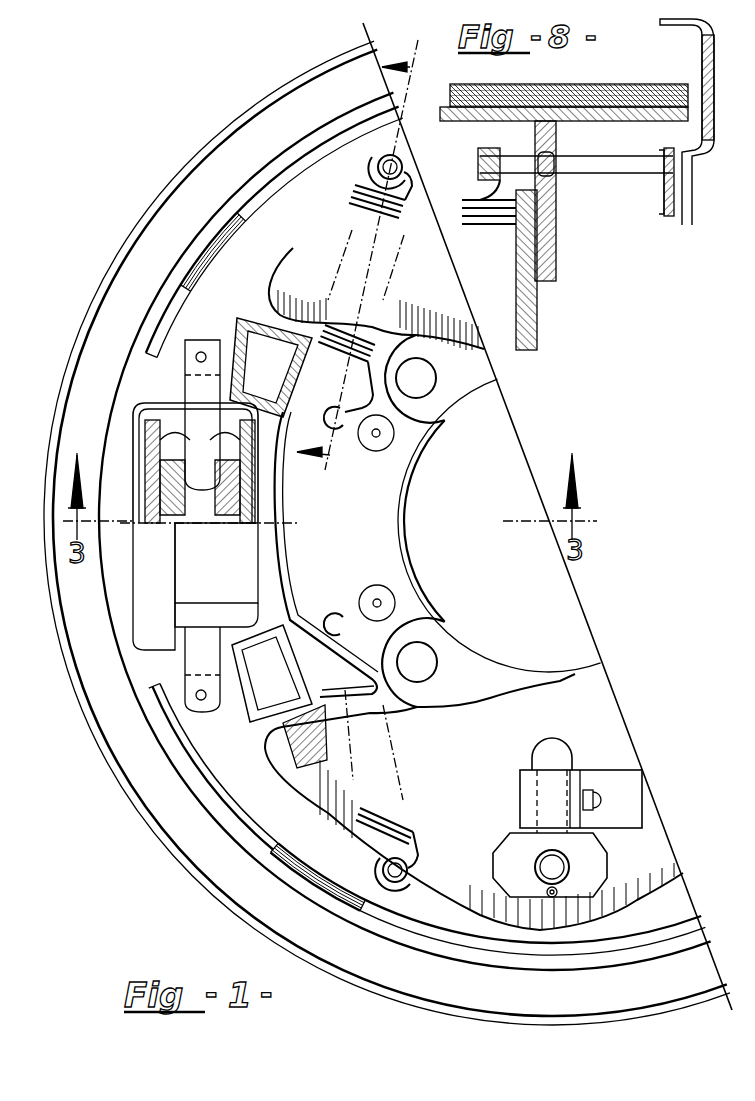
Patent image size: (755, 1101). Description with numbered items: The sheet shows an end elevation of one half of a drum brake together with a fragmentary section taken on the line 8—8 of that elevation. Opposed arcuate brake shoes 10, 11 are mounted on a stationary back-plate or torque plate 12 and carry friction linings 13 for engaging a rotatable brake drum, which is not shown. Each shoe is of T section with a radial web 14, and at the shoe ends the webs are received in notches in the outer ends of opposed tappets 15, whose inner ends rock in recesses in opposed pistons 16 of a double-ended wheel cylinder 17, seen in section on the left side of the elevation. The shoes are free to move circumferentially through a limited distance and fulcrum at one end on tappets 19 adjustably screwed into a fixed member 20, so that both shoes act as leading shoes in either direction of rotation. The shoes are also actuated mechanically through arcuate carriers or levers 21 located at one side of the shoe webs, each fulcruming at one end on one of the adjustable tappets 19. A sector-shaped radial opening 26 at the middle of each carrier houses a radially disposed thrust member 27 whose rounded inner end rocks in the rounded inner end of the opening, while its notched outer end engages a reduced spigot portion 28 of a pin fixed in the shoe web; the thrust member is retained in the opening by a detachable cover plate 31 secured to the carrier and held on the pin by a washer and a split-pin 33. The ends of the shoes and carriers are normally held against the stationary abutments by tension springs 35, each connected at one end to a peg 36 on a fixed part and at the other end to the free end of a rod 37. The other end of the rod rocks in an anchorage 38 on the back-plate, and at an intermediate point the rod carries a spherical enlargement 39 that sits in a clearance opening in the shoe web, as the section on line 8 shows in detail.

In FIG. 1, the section line 8— 8 is at (361, 267).
In FIG. 1, the brake shoe 10 is at (212, 786).
In FIG. 1, the brake shoe 11 is at (262, 136).
In FIG. 8, the brake shoe 11 is at (636, 120).
In FIG. 1, the back-plate 12 is at (672, 990).
In FIG. 8, the back-plate 12 is at (705, 52).
In FIG. 1, the friction lining 13 is at (175, 272).
In FIG. 8, the friction lining 13 is at (628, 97).
In FIG. 1, the radial web 14 is at (215, 218).
In FIG. 8, the radial web 14 is at (550, 200).
In FIG. 1, the tappet 15 is at (195, 380).
In FIG. 1, the piston 16 is at (150, 462).
In FIG. 1, the wheel cylinder 17 is at (225, 571).
In FIG. 1, the adjustable tappet 19 is at (262, 334).
In FIG. 1, the fixed member 20 is at (265, 432).
In FIG. 1, the carrier or lever 21 is at (430, 300).
In FIG. 8, the carrier or lever 21 is at (530, 304).
In FIG. 1, the radial opening 26 is at (505, 852).
In FIG. 1, the thrust member 27 is at (548, 757).
In FIG. 1, the spigot portion 28 is at (560, 867).
In FIG. 1, the cover plate 31 is at (625, 800).
In FIG. 1, the split-pin 33 is at (572, 893).
In FIG. 1, the tension spring 35 is at (372, 213).
In FIG. 8, the tension spring 35 is at (497, 224).
In FIG. 1, the peg 36 is at (345, 410).
In FIG. 1, the rod 37 is at (405, 167).
In FIG. 8, the rod 37 is at (620, 166).
In FIG. 8, the anchorage 38 is at (669, 185).
In FIG. 8, the spherical enlargement 39 is at (538, 157).